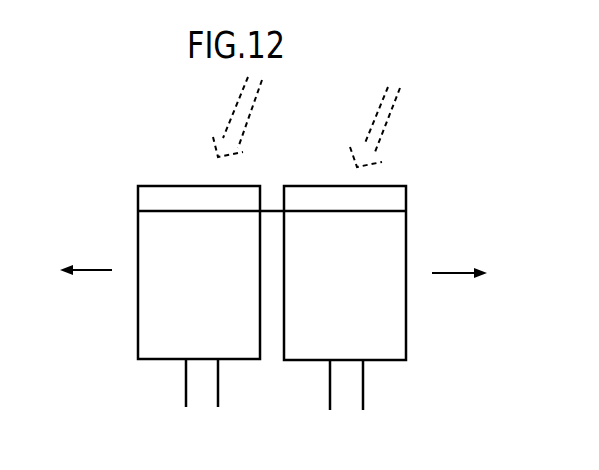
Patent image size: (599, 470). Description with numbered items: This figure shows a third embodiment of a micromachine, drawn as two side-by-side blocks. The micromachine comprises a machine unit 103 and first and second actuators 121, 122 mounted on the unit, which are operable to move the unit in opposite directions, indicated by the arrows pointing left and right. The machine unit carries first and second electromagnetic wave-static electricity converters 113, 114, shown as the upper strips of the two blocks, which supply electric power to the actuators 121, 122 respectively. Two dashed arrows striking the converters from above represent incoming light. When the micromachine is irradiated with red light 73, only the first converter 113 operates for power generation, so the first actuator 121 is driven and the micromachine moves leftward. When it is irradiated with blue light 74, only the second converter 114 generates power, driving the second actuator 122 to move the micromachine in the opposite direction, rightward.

The machine unit 103 is at (267, 288).
The first electromagnetic wave-static electricity converter 113 is at (160, 192).
The second electromagnetic wave-static electricity converter 114 is at (392, 203).
The first actuator 121 is at (165, 320).
The second actuator 122 is at (392, 332).
The red light 73 is at (243, 98).
The blue light 74 is at (377, 120).